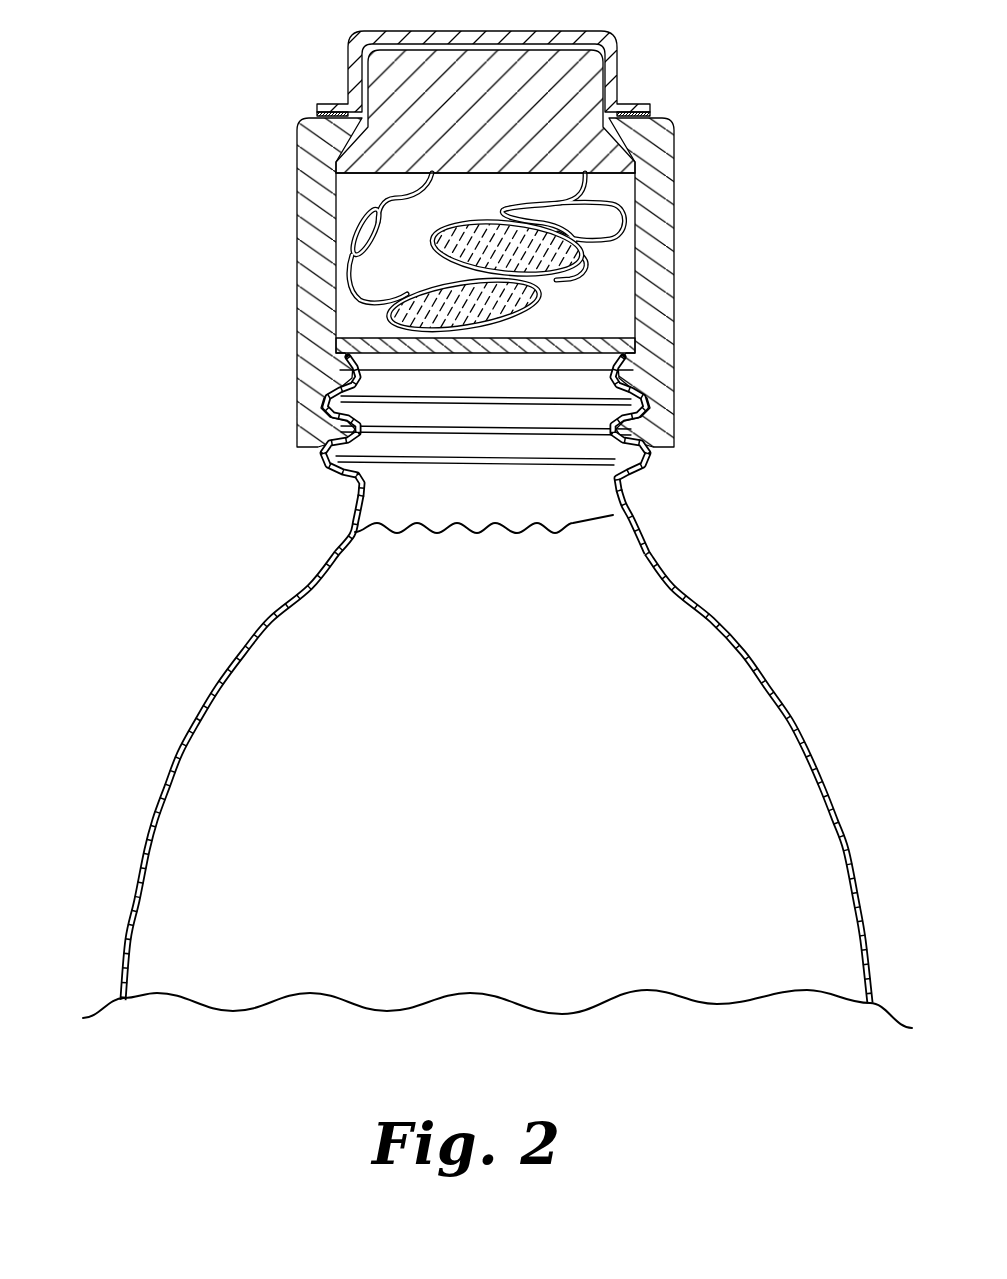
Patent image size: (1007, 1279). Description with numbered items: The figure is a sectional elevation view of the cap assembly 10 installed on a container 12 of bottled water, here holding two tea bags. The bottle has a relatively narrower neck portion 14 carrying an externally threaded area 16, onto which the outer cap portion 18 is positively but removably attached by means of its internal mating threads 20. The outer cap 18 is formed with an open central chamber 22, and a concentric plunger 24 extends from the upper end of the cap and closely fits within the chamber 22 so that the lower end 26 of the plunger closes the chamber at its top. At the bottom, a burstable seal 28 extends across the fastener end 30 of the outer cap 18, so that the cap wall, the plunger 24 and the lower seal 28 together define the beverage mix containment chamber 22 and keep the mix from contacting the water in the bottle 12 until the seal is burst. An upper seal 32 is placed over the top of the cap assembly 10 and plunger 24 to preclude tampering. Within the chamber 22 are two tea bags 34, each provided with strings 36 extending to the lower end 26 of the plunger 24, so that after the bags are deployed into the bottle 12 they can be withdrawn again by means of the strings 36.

The cap assembly 10 is at (228, 272).
The container 12 is at (168, 778).
The neck portion 14 is at (352, 514).
The externally threaded area 16 is at (647, 458).
The outer cap portion 18 is at (495, 310).
The threads 20 is at (640, 427).
The central chamber 22 is at (612, 320).
The plunger 24 is at (617, 78).
The lower end of the plunger 26 is at (455, 174).
The burstable seal 28 is at (463, 355).
The fastener end 30 is at (297, 350).
The upper seal 32 is at (357, 43).
The tea bags 34 is at (553, 278).
The strings 36 is at (543, 200).